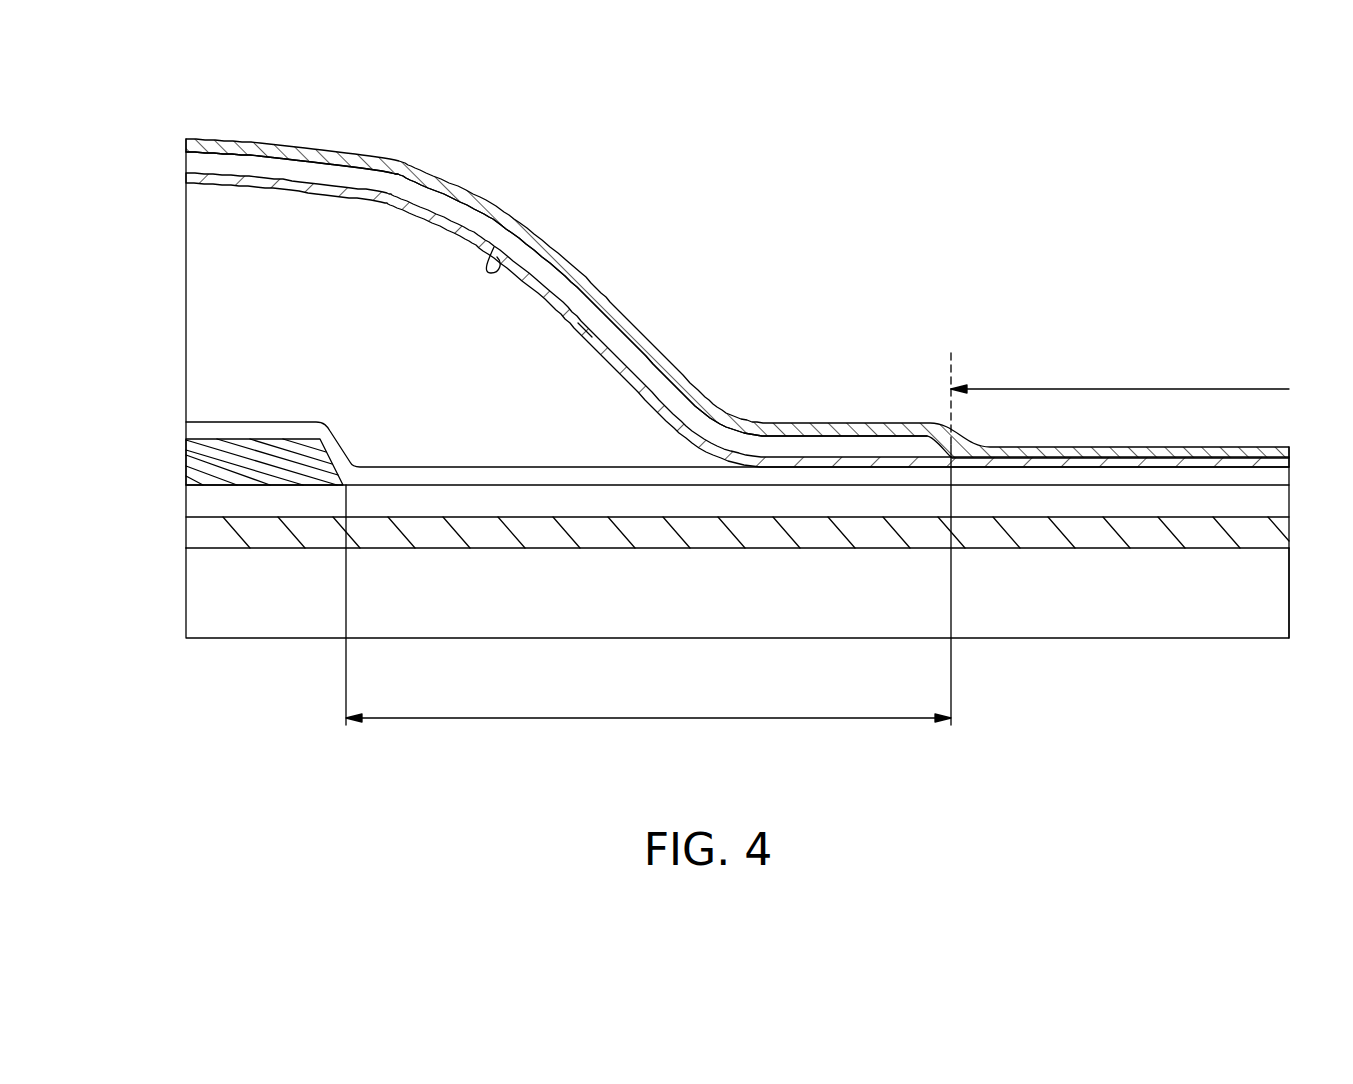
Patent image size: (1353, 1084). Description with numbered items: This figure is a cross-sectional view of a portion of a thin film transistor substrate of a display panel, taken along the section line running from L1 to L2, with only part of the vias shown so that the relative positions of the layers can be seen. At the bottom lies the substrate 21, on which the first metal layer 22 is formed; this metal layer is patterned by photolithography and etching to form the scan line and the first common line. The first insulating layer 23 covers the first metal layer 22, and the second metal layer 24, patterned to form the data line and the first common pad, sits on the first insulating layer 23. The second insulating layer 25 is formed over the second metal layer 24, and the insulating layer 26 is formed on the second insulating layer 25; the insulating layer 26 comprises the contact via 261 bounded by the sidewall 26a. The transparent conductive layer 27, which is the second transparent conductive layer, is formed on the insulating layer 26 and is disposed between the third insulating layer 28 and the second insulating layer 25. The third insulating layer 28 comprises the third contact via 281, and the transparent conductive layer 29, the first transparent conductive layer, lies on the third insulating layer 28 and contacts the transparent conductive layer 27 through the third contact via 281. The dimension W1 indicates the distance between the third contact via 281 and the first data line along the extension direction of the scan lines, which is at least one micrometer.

The substrate 21 is at (190, 613).
The first metal layer 22 is at (197, 532).
The first insulating layer 23 is at (193, 508).
The second metal layer 24 is at (190, 472).
The second insulating layer 25 is at (190, 432).
The insulating layer 26 is at (197, 317).
The sidewall of the contact via 26a is at (494, 247).
The contact via 261 is at (578, 323).
The transparent conductive layer 27 is at (187, 180).
The third insulating layer 28 is at (190, 163).
The third contact via 281 is at (1120, 399).
The transparent conductive layer 29 is at (186, 143).
The distance between the third contact via and the first data line W1 is at (648, 585).
The line L1 is at (185, 680).
The line L2 is at (1285, 682).